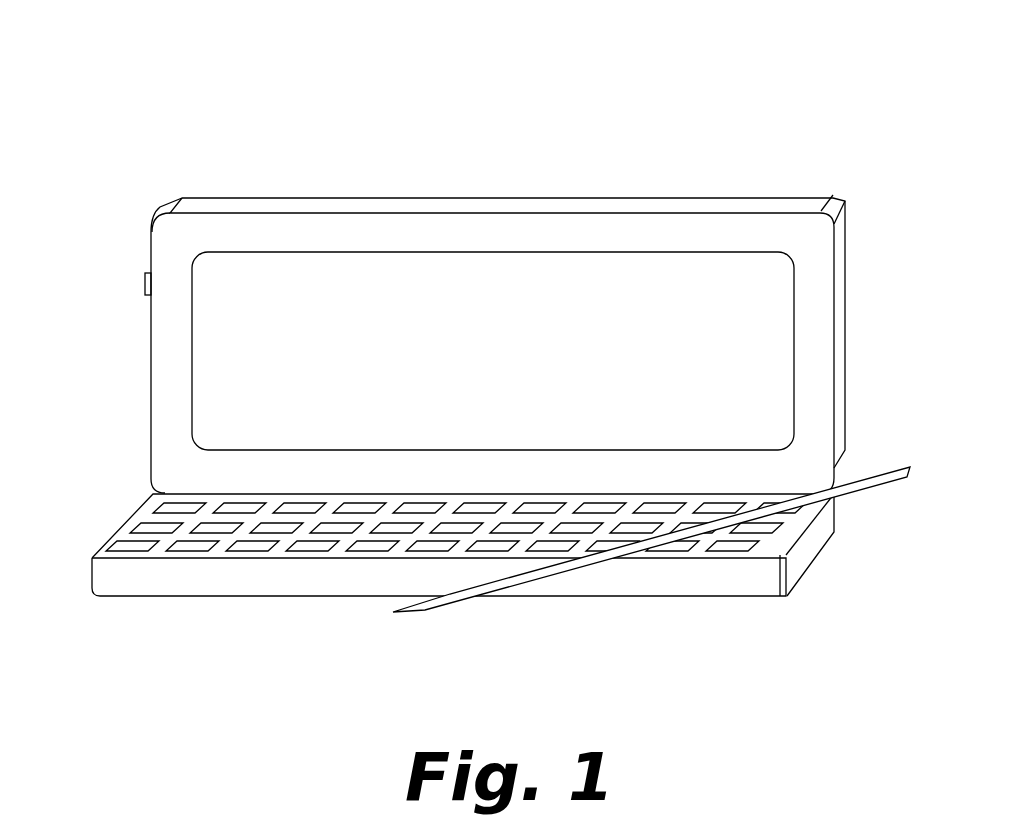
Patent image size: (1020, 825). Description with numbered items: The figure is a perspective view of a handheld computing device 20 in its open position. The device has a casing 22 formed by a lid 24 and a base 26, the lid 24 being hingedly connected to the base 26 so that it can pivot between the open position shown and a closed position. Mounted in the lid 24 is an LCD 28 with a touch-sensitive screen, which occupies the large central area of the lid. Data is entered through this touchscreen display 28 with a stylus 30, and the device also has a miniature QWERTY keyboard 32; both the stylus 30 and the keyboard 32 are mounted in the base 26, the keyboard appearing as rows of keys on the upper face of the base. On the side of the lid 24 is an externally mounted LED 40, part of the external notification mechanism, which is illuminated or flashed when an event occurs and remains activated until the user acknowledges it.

The handheld computing device 20 is at (480, 350).
The casing 22 is at (480, 573).
The lid 24 is at (667, 200).
The base 26 is at (708, 590).
The LCD 28 is at (496, 366).
The stylus 30 is at (468, 592).
The miniature QWERTY keyboard 32 is at (168, 523).
The LED 40 is at (148, 273).